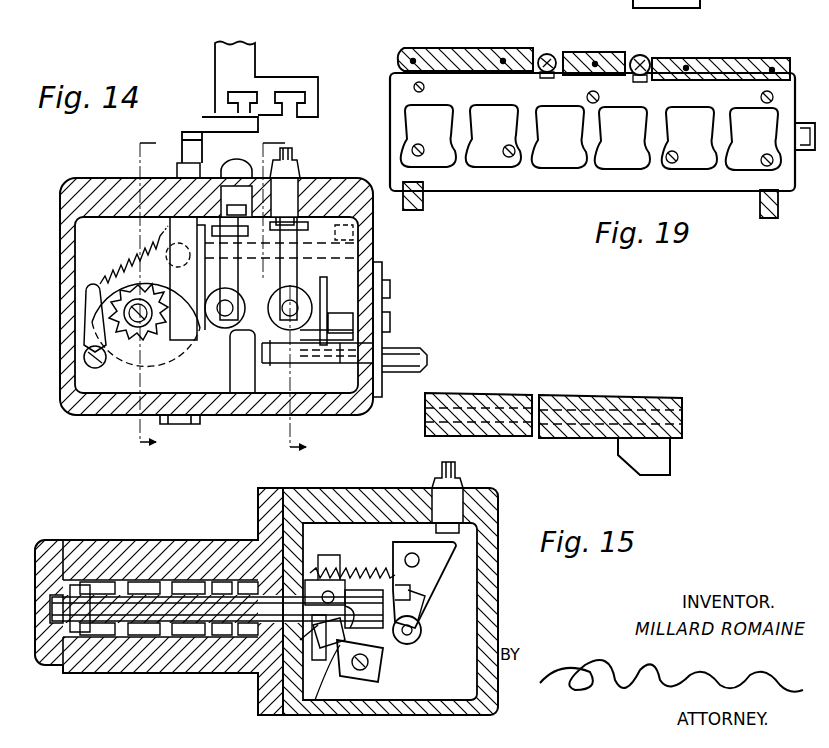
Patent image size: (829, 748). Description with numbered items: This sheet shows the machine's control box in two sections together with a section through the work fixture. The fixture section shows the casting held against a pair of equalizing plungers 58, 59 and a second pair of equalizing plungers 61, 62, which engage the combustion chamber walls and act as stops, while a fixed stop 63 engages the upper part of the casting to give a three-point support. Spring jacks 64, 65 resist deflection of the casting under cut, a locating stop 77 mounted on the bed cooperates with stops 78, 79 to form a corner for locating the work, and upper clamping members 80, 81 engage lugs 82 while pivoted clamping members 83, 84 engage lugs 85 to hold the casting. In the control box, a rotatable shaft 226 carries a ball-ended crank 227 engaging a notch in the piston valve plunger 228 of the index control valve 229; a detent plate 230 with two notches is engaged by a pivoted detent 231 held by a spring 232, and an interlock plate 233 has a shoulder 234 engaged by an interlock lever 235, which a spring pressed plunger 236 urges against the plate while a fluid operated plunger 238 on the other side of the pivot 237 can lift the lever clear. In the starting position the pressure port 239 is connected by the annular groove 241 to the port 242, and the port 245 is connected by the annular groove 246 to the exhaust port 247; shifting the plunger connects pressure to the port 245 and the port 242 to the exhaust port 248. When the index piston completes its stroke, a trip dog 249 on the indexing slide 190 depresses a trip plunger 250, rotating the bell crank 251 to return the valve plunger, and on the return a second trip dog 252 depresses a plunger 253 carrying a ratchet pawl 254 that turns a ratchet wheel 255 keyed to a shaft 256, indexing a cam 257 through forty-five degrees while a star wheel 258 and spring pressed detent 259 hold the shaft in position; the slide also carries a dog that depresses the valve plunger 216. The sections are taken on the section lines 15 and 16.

In FIG. 14, the section line 15- 15 is at (296, 294).
In FIG. 14, the section line 16- 16 is at (159, 294).
In FIG. 19, the equalizing plunger 58 is at (415, 145).
In FIG. 19, the equalizing plunger 59 is at (510, 160).
In FIG. 19, the equalizing plunger 61 is at (673, 163).
In FIG. 19, the equalizing plunger 62 is at (765, 166).
In FIG. 19, the fixed stop 63 is at (595, 92).
In FIG. 19, the spring jack 64 is at (412, 87).
In FIG. 19, the spring jack 65 is at (767, 91).
In FIG. 19, the locating stop 77 is at (808, 124).
In FIG. 19, the stop 78 is at (486, 56).
In FIG. 19, the stop 79 is at (740, 50).
In FIG. 19, the upper clamping member 80 is at (549, 54).
In FIG. 19, the upper clamping member 81 is at (645, 60).
In FIG. 19, the lug 82 is at (552, 58).
In FIG. 19, the pivoted clamping member 83 is at (424, 204).
In FIG. 19, the pivoted clamping member 84 is at (779, 216).
In FIG. 19, the lug 85 is at (424, 195).
In FIG. 14, the indexing slide 190 is at (320, 97).
In FIG. 15, the indexing slide 190 is at (527, 395).
In FIG. 14, the plunger 216 is at (236, 306).
In FIG. 14, the rotatable shaft 226 is at (395, 352).
In FIG. 15, the rotatable shaft 226 is at (370, 682).
In FIG. 15, the ball-ended crank 227 is at (383, 668).
In FIG. 15, the piston valve plunger 228 is at (394, 598).
In FIG. 15, the index control valve 229 is at (140, 583).
In FIG. 15, the detent plate 230 is at (418, 640).
In FIG. 15, the pivoted detent 231 is at (428, 605).
In FIG. 15, the spring 232 is at (365, 575).
In FIG. 15, the interlock plate 233 is at (326, 705).
In FIG. 15, the shoulder 234 is at (325, 662).
In FIG. 15, the interlock lever 235 is at (258, 705).
In FIG. 15, the spring pressed plunger 236 is at (250, 676).
In FIG. 15, the pivot 237 is at (330, 592).
In FIG. 15, the fluid operated plunger 238 is at (310, 560).
In FIG. 15, the pressure port 239 is at (170, 583).
In FIG. 15, the annular groove 241 is at (205, 625).
In FIG. 15, the port 242 is at (200, 583).
In FIG. 15, the port 245 is at (105, 583).
In FIG. 15, the annular groove 246 is at (105, 640).
In FIG. 15, the exhaust port 247 is at (85, 583).
In FIG. 15, the exhaust port 248 is at (232, 583).
In FIG. 15, the trip dog 249 is at (668, 468).
In FIG. 14, the trip plunger 250 is at (300, 158).
In FIG. 15, the trip plunger 250 is at (458, 470).
In FIG. 14, the bell crank 251 is at (293, 275).
In FIG. 14, the trip dog 252 is at (190, 110).
In FIG. 14, the plunger 253 is at (177, 168).
In FIG. 14, the ratchet pawl 254 is at (204, 400).
In FIG. 14, the ratchet wheel 255 is at (128, 400).
In FIG. 14, the shaft 256 is at (128, 318).
In FIG. 14, the cam 257 is at (92, 405).
In FIG. 15, the cam 257 is at (435, 572).
In FIG. 14, the star wheel 258 is at (107, 310).
In FIG. 14, the spring pressed detent 259 is at (100, 288).